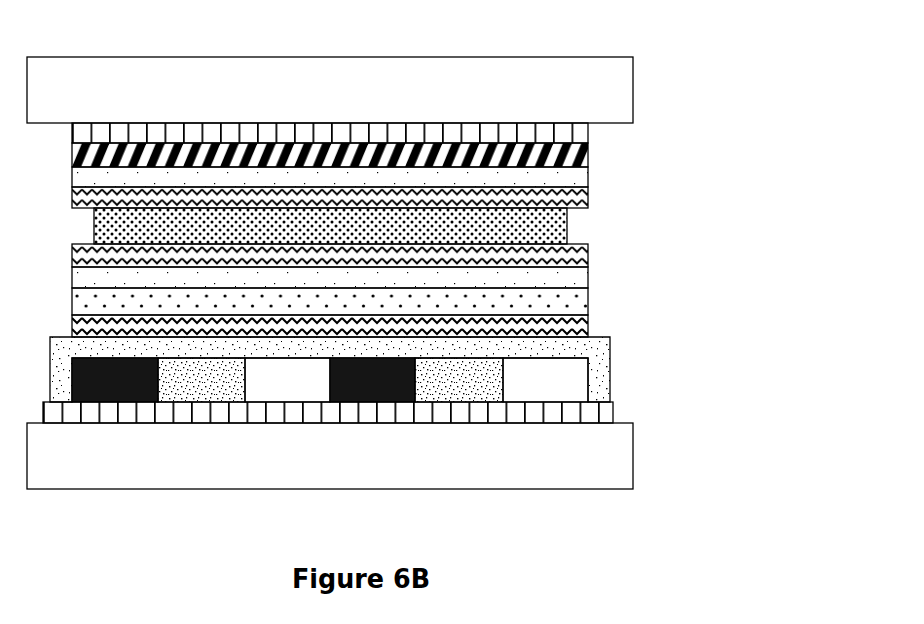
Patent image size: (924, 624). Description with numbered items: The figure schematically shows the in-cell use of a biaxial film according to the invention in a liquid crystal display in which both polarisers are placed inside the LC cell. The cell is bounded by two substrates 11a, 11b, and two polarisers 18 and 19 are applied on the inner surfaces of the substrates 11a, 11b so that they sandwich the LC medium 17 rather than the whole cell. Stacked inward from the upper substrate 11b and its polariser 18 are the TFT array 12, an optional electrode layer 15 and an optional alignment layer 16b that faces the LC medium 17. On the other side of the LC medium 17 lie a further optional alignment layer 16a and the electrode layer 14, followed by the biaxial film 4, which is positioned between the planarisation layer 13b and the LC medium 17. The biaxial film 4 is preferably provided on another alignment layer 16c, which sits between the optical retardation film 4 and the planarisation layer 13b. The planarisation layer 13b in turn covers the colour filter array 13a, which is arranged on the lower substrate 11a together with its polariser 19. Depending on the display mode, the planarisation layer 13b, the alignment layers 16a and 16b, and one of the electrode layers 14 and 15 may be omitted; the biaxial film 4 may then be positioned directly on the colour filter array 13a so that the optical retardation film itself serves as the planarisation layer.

The substrate 11b is at (633, 78).
The polariser 18 is at (583, 132).
The TFT array 12 is at (583, 155).
The electrode layer 15 is at (583, 170).
The alignment layer 16b is at (583, 200).
The LC medium 17 is at (567, 225).
The alignment layer 16a is at (590, 252).
The electrode layer 14 is at (582, 280).
The biaxial film 4 is at (580, 300).
The alignment layer 16c is at (590, 322).
The planarisation layer 13b is at (580, 350).
The colour filter array 13a is at (578, 391).
The polariser 19 is at (598, 408).
The substrate 11a is at (632, 463).